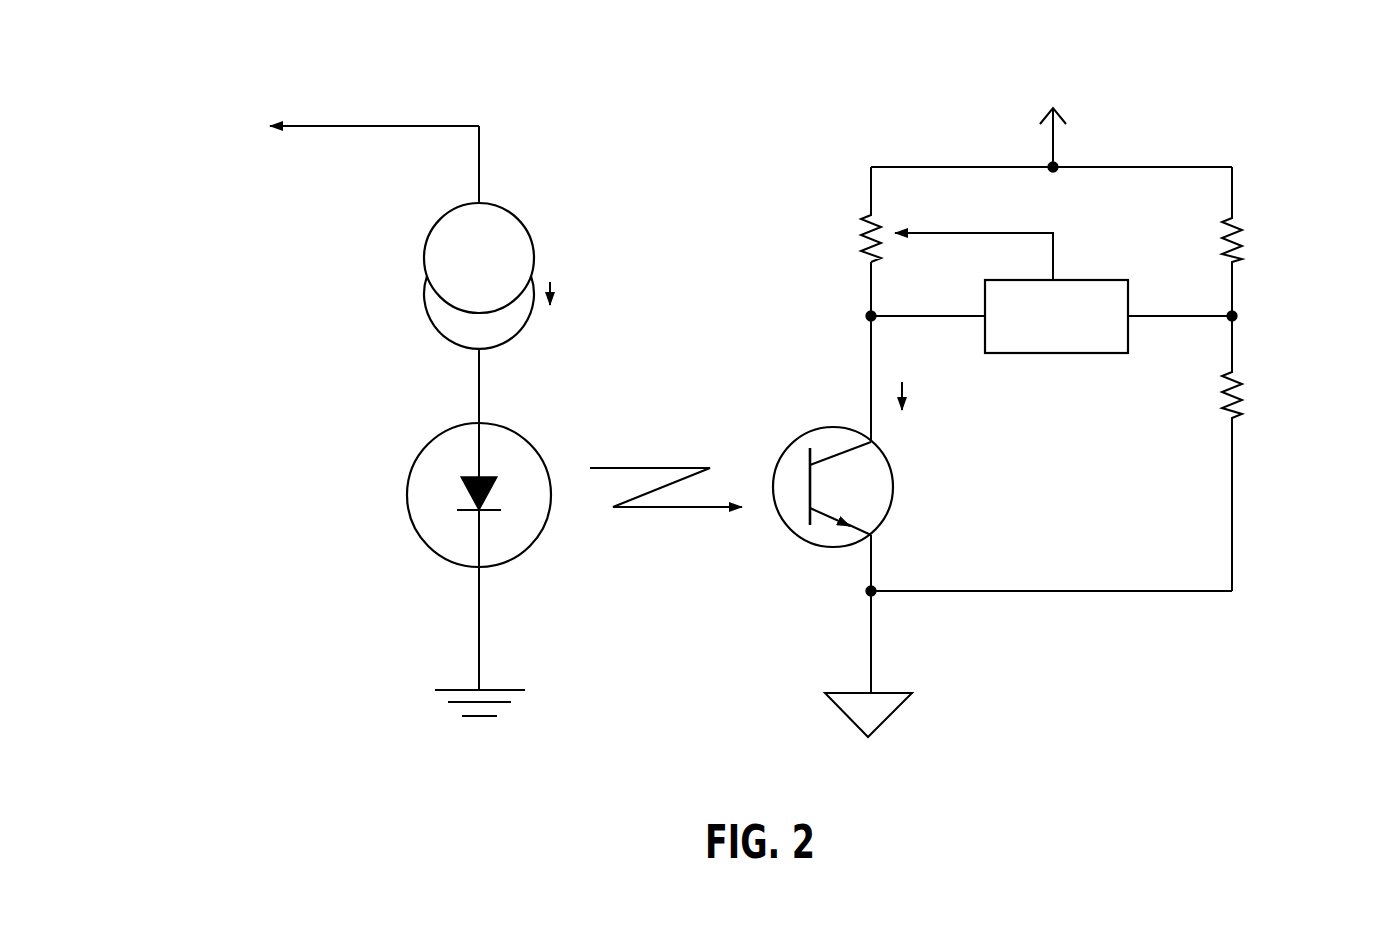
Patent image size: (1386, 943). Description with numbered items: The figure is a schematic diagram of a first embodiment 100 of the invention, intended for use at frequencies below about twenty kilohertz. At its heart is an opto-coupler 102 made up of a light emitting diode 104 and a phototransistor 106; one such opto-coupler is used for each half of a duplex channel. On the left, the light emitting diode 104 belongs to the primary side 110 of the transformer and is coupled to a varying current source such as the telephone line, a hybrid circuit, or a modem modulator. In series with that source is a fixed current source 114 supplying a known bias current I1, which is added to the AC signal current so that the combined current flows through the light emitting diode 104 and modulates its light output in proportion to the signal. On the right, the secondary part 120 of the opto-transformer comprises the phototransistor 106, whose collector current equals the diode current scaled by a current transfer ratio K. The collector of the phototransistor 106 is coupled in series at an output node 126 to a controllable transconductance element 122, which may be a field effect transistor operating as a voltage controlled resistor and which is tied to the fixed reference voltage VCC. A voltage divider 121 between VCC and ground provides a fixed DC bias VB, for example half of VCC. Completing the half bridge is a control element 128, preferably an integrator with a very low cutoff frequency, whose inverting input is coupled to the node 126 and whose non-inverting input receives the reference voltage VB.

The first embodiment 100 is at (637, 92).
The primary side 110 is at (508, 140).
The fixed current source 114 is at (427, 318).
The light emitting diode 104 is at (431, 553).
The opto-coupler 102 is at (590, 600).
The phototransistor 106 is at (808, 545).
The secondary part 120 is at (840, 198).
The controllable transconductance element 122 is at (860, 240).
The output node 126 is at (866, 316).
The control element 128 is at (1093, 353).
The voltage divider 121 is at (1283, 298).